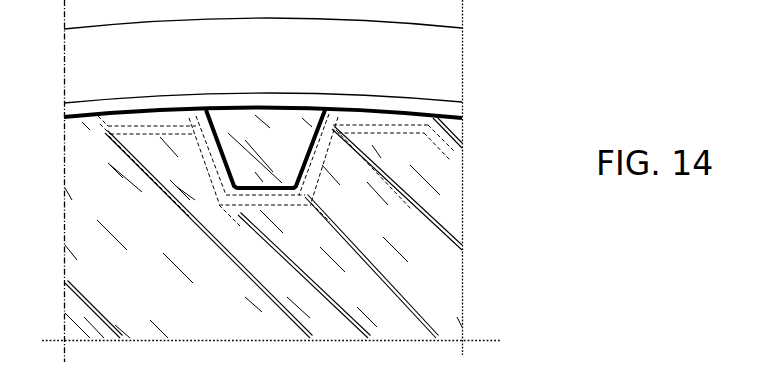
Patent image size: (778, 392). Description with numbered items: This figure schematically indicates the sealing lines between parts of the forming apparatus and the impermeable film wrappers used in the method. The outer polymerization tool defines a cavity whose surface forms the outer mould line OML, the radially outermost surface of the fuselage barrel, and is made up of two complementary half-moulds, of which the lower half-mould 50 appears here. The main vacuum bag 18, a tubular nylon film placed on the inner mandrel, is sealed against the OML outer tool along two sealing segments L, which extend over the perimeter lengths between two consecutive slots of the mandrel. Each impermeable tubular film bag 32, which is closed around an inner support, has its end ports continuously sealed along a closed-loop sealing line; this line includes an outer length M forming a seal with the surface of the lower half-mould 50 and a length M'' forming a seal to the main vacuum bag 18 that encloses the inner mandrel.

The lower half-mould 50 is at (123, 53).
The sealing segments L is at (86, 117).
The outer mould line OML is at (463, 111).
The impermeable tubular film bag 32 is at (295, 135).
The material M is at (270, 91).
The sealing length M'' is at (276, 242).
The main vacuum bag 18 is at (112, 186).